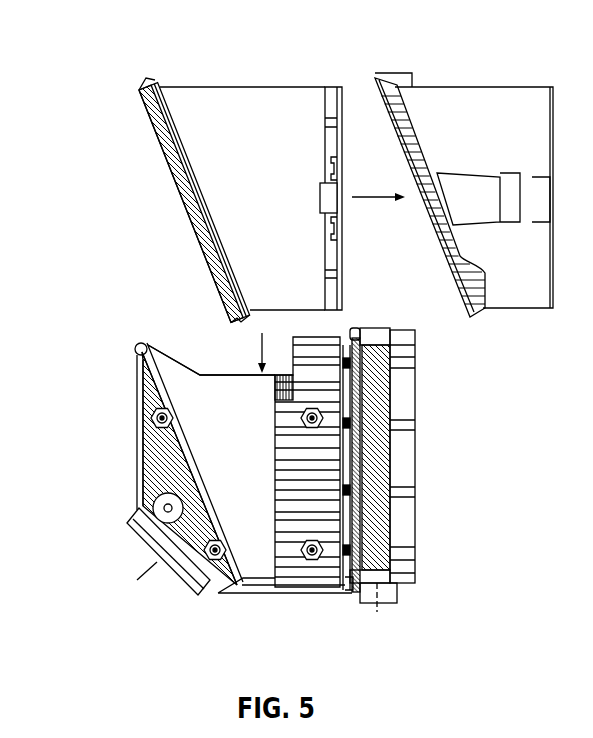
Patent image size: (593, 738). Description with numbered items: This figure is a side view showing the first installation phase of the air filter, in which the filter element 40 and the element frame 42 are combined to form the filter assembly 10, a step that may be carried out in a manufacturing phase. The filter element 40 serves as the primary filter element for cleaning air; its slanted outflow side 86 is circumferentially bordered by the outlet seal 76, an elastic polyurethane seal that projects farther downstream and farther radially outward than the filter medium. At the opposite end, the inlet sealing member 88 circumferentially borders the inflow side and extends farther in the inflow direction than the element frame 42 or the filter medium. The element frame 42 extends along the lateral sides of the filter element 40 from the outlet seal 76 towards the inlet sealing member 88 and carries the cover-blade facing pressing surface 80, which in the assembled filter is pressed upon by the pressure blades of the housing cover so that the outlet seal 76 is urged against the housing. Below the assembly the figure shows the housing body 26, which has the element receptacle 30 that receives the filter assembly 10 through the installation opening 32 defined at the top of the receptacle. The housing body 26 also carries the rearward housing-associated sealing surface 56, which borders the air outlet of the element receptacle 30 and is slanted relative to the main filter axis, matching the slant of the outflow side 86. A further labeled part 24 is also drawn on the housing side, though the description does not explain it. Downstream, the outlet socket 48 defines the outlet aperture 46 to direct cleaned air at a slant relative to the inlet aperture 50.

The filter assembly 10 is at (96, 53).
The plate 24 is at (327, 593).
The housing body 26 is at (289, 602).
The element receptacle 30 is at (293, 366).
The installation opening 32 is at (210, 372).
The filter element 40 is at (231, 104).
The element frame 42 is at (526, 294).
The outlet aperture 46 is at (133, 535).
The outlet socket 48 is at (193, 592).
The inlet aperture 50 is at (417, 453).
The rearward housing-associated sealing surface 56 is at (137, 463).
The outlet seal 76 is at (157, 147).
The cover-blade facing pressing surface 80 is at (415, 128).
The outflow side 86 is at (187, 207).
The inlet sealing member 88 is at (332, 85).